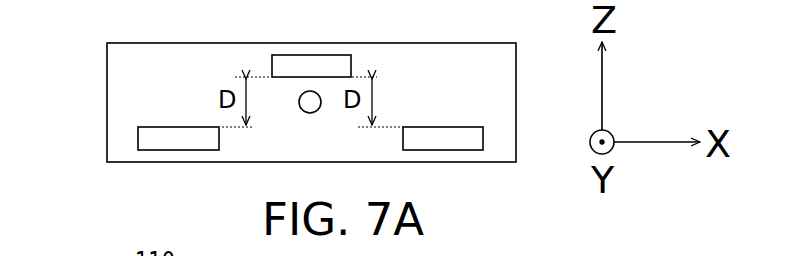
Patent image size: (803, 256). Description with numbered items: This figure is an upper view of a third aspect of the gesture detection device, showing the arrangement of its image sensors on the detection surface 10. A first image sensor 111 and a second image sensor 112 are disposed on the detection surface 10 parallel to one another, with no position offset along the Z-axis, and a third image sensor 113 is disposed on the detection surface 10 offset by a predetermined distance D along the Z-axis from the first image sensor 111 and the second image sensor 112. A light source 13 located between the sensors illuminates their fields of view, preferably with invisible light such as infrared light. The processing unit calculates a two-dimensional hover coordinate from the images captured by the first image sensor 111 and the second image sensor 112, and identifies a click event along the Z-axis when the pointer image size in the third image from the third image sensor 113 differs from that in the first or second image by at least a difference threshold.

The detection surface 10 is at (115, 103).
The first image sensor 111 is at (138, 141).
The second image sensor 112 is at (483, 138).
The third image sensor 113 is at (292, 55).
The light source 13 is at (312, 111).